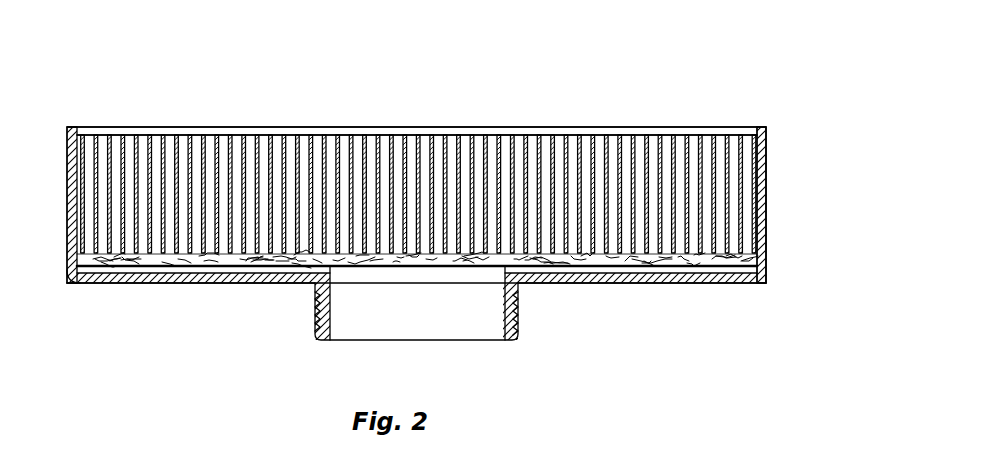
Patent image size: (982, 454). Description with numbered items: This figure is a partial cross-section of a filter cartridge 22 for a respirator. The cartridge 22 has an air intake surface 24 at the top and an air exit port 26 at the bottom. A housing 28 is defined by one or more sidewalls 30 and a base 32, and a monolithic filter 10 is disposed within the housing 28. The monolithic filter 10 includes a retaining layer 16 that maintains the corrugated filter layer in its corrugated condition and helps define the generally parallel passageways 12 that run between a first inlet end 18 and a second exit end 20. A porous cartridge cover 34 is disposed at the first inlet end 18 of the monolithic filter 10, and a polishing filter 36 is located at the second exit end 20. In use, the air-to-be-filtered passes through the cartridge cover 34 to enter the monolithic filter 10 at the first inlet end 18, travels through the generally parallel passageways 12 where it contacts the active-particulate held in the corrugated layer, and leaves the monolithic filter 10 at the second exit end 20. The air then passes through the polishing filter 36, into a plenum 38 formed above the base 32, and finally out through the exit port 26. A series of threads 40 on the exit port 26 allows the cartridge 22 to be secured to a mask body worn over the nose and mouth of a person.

The monolithic filter 10 is at (143, 133).
The generally parallel passageways 12 is at (612, 130).
The retaining layer 16 is at (306, 153).
The first inlet end 18 is at (377, 135).
The second exit end 20 is at (183, 255).
The filter cartridge 22 is at (694, 57).
The air intake surface 24 is at (684, 124).
The air exit port 26 is at (332, 322).
The housing 28 is at (768, 205).
The sidewall 30 is at (768, 173).
The base 32 is at (631, 284).
The porous cartridge cover 34 is at (485, 134).
The polishing filter 36 is at (247, 262).
The plenum 38 is at (118, 263).
The threads 40 is at (515, 312).